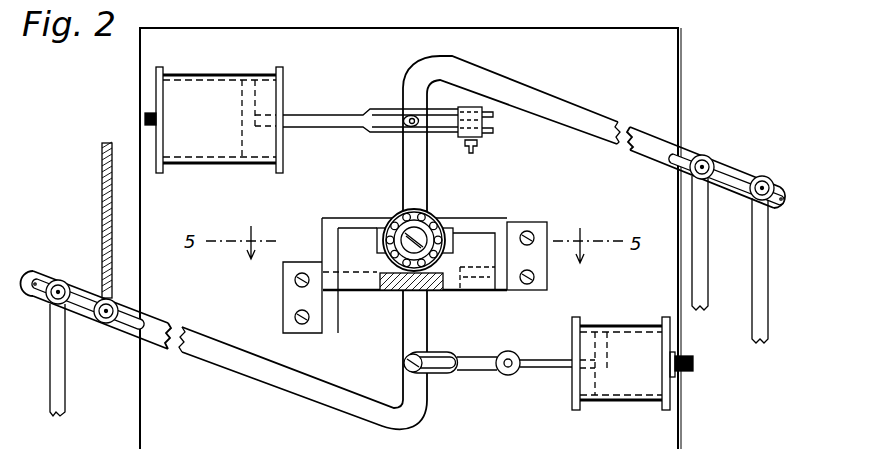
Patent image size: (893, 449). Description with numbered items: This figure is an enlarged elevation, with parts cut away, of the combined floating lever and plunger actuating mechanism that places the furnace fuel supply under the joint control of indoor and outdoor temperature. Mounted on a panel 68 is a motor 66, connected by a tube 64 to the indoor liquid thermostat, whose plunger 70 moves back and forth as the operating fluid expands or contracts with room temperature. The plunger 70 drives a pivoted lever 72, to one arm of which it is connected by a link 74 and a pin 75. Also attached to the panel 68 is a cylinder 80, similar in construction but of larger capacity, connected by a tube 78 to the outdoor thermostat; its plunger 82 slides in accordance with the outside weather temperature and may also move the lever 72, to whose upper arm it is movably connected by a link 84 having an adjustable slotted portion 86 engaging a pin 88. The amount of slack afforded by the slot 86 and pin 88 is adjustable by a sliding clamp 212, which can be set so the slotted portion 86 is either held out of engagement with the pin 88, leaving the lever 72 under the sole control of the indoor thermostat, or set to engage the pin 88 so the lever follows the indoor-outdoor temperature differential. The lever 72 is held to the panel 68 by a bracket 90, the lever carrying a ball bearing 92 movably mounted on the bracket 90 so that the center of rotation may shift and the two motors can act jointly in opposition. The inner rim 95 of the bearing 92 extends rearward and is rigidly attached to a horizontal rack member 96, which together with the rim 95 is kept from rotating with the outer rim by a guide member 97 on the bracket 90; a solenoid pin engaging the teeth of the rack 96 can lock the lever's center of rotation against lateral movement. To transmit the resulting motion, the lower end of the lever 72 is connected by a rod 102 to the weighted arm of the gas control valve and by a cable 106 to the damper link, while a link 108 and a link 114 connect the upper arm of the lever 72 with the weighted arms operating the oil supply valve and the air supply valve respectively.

The tube 64 is at (684, 373).
The motor 66 is at (626, 401).
The panel 68 is at (677, 431).
The plunger 70 is at (604, 347).
The pivoted lever 72 is at (418, 327).
The link 74 is at (480, 371).
The pin 75 is at (404, 364).
The tube 78 is at (148, 112).
The cylinder 80 is at (201, 75).
The plunger 82 is at (242, 150).
The link 84 is at (343, 123).
The adjustable slotted portion 86 is at (445, 129).
The pin 88 is at (410, 128).
The bracket 90 is at (490, 291).
The ball bearing 92 is at (433, 218).
The inner rim 95 is at (397, 215).
The rack member 96 is at (462, 230).
The guide member 97 is at (327, 237).
The rod 102 is at (53, 397).
The cable 106 is at (103, 200).
The link 108 is at (705, 233).
The link 114 is at (770, 271).
The sliding clamp 212 is at (478, 138).